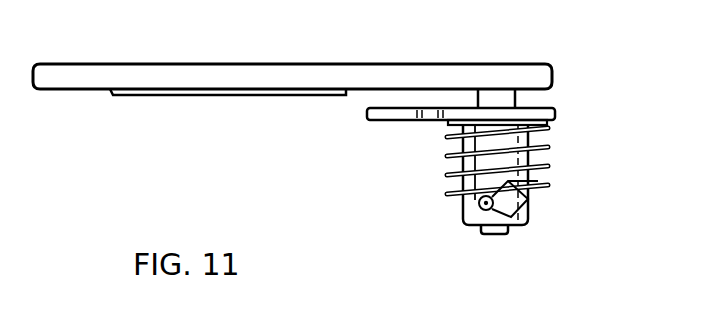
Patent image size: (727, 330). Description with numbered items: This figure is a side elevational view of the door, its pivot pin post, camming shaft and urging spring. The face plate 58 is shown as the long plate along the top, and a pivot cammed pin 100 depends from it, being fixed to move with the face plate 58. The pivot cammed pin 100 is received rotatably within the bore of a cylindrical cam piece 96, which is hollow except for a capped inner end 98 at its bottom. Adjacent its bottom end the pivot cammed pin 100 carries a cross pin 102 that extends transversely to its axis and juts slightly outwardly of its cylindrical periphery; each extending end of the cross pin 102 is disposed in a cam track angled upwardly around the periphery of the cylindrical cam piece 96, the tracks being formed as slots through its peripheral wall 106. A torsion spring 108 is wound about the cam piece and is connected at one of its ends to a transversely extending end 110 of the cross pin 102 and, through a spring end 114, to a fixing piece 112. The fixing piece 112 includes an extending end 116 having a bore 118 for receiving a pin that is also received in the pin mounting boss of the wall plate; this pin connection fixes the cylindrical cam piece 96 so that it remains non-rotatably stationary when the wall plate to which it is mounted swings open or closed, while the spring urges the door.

The face plate 58 is at (223, 66).
The cylindrical cam piece 96 is at (533, 211).
The capped inner end 98 is at (505, 234).
The pivot cammed pin 100 is at (518, 104).
The cross pin 102 is at (472, 207).
The peripheral wall 106 is at (525, 182).
The torsion spring 108 is at (548, 152).
The transversely extending end 110 is at (517, 225).
The fixing piece 112 is at (441, 117).
The spring end 114 is at (447, 128).
The extending end 116 is at (367, 115).
The bore 118 is at (422, 108).